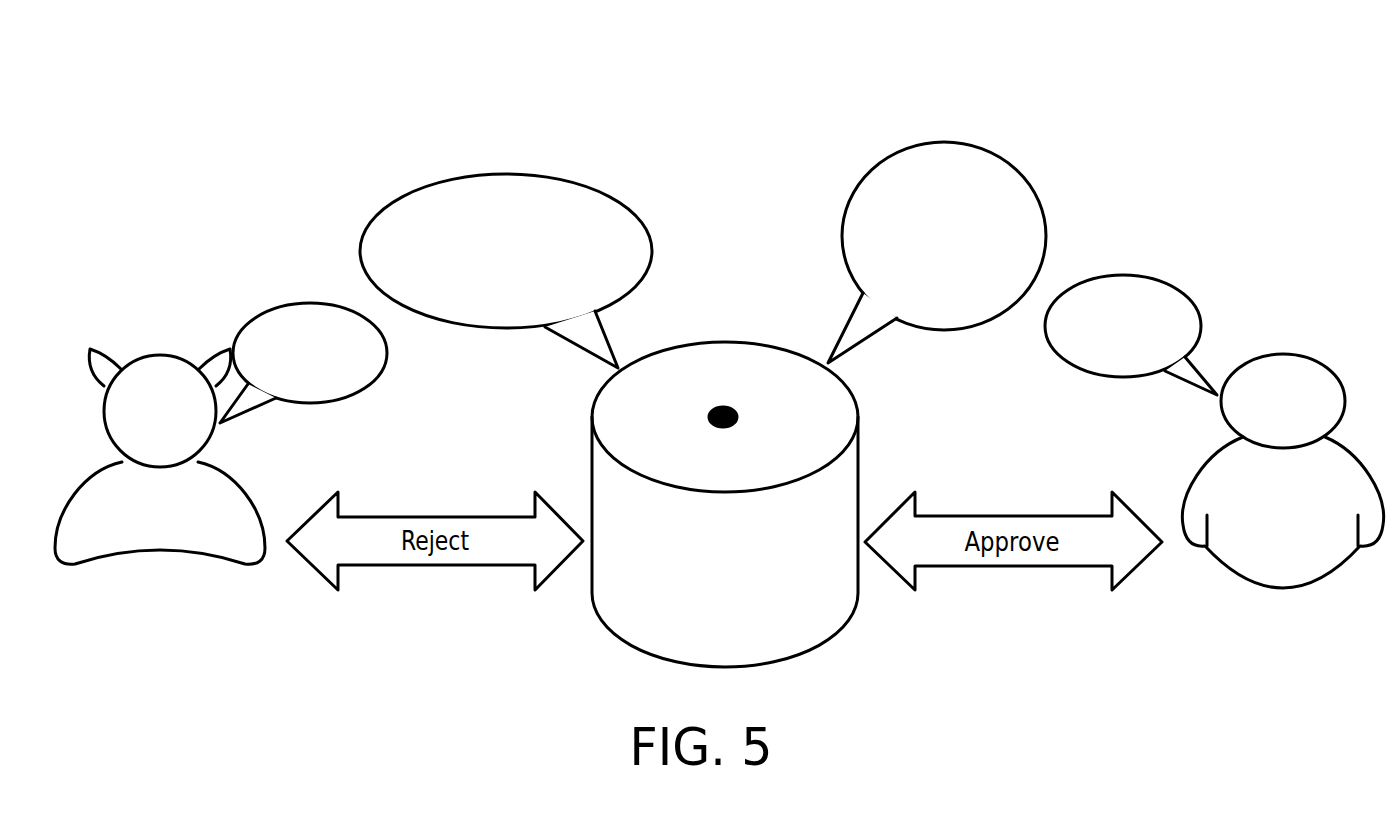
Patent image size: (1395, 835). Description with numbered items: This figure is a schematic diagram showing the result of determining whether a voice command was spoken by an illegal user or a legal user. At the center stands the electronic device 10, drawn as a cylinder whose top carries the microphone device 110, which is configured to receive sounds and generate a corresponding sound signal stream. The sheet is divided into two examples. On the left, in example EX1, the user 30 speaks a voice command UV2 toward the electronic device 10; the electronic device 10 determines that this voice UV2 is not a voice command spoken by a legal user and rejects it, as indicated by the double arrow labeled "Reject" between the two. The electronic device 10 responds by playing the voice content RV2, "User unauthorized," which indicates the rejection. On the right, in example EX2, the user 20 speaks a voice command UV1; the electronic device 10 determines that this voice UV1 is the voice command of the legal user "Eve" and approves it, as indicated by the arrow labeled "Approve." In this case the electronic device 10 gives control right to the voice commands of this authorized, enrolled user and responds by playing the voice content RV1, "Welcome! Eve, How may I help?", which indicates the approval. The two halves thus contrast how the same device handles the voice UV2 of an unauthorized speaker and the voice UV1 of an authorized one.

The electronic device 10 is at (725, 342).
The microphone device 110 is at (738, 417).
The user 20 is at (1285, 353).
The user 30 is at (137, 357).
The voice UV1 is at (1193, 302).
The voice UV2 is at (262, 307).
The voice content RV1 is at (1008, 163).
The voice content RV2 is at (572, 183).
The example EX1 is at (378, 53).
The example EX2 is at (1103, 53).